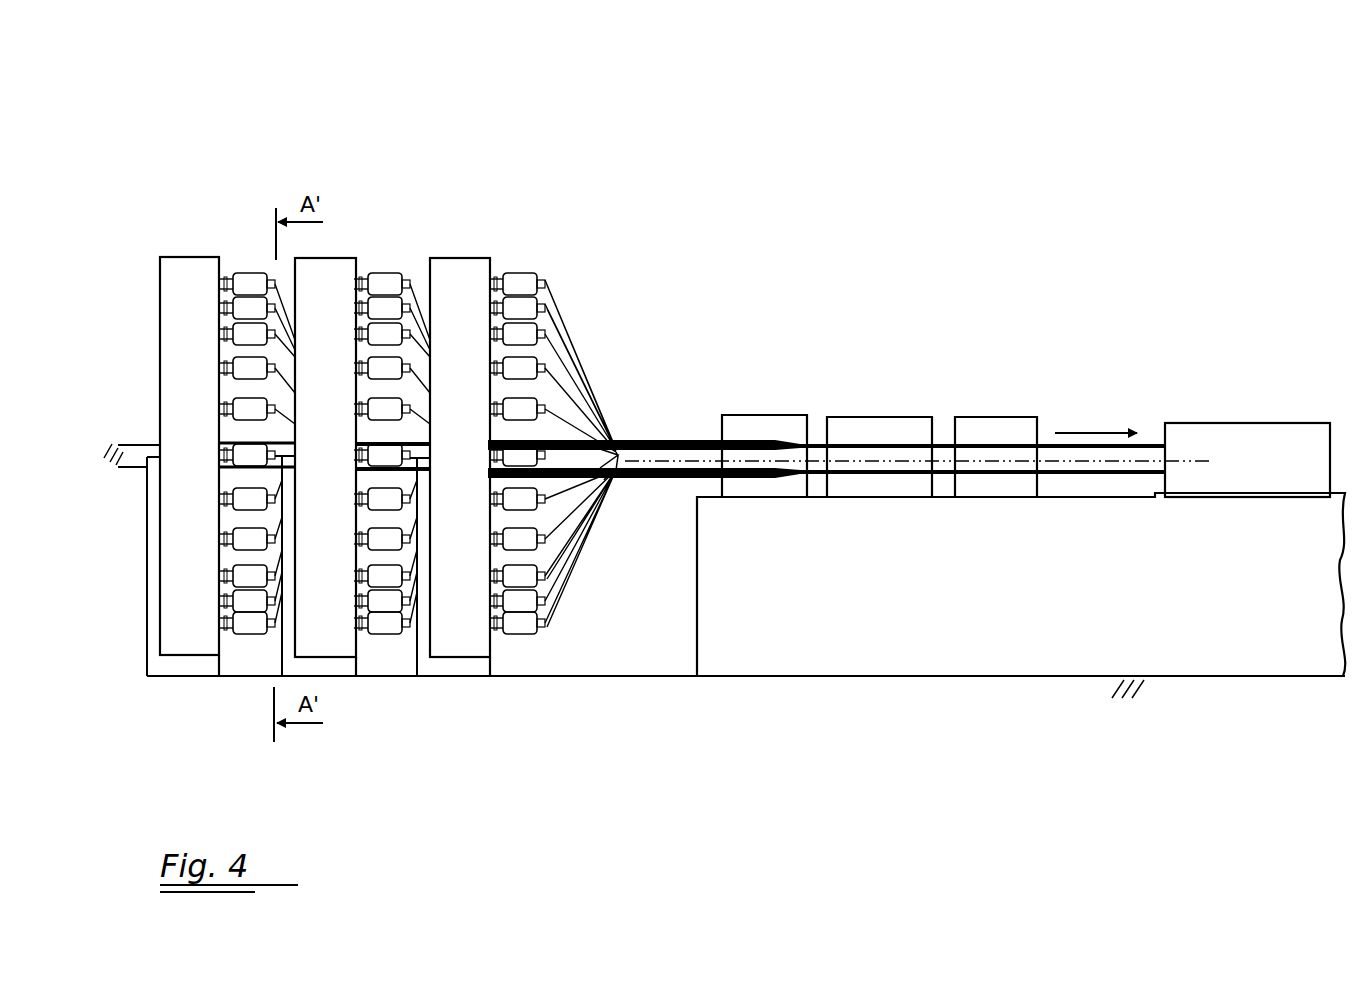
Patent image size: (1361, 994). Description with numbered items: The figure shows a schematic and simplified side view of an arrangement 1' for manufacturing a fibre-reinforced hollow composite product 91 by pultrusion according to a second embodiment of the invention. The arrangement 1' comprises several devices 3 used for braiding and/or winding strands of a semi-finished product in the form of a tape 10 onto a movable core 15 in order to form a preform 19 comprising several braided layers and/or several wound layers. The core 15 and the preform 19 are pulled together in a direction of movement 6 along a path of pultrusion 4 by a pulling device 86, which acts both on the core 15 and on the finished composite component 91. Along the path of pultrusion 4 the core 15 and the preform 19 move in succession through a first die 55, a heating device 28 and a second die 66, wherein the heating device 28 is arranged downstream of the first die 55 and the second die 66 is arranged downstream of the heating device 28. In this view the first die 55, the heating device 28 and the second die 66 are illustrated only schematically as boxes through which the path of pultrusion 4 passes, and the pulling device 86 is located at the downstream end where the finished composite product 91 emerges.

The arrangement 1' is at (1306, 72).
The braiding or winding devices 3 is at (190, 265).
The tape 10 is at (573, 348).
The movable core 15 is at (665, 462).
The preform 19 is at (670, 478).
The path of pultrusion 4 is at (903, 458).
The first die 55 is at (763, 412).
The heating device 28 is at (872, 412).
The second die 66 is at (990, 412).
The direction of movement 6 is at (1094, 430).
The pulling device 86 is at (1252, 420).
The fibre-reinforced hollow composite product 91 is at (1108, 477).